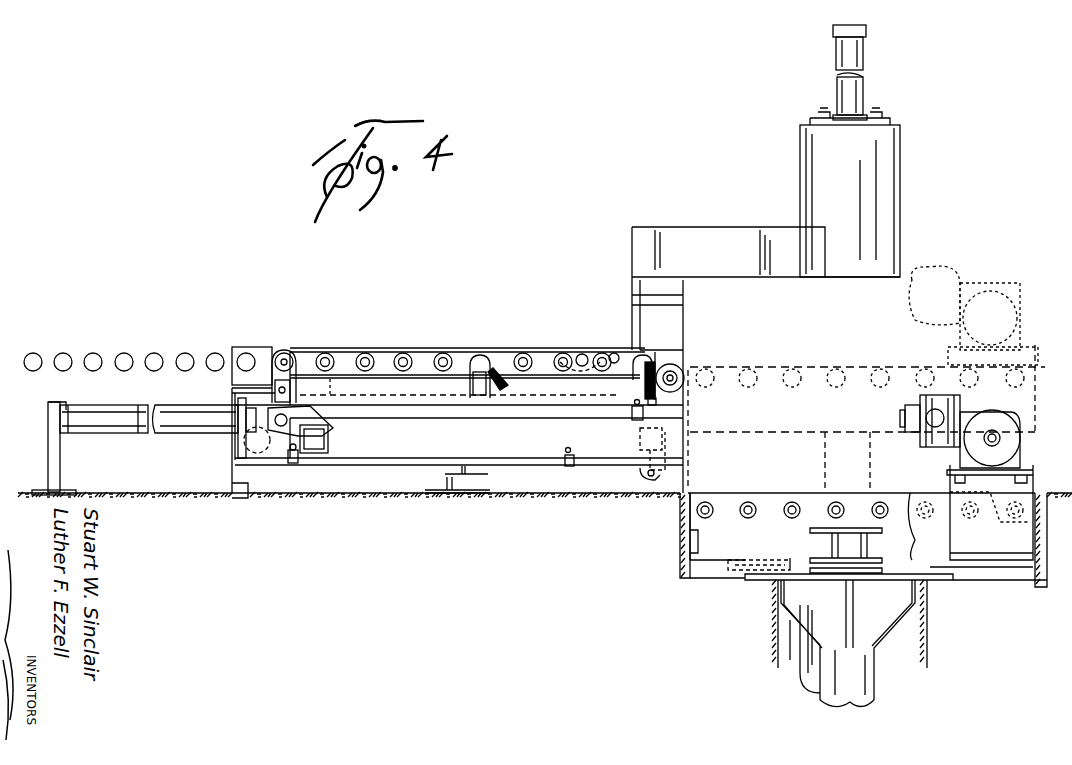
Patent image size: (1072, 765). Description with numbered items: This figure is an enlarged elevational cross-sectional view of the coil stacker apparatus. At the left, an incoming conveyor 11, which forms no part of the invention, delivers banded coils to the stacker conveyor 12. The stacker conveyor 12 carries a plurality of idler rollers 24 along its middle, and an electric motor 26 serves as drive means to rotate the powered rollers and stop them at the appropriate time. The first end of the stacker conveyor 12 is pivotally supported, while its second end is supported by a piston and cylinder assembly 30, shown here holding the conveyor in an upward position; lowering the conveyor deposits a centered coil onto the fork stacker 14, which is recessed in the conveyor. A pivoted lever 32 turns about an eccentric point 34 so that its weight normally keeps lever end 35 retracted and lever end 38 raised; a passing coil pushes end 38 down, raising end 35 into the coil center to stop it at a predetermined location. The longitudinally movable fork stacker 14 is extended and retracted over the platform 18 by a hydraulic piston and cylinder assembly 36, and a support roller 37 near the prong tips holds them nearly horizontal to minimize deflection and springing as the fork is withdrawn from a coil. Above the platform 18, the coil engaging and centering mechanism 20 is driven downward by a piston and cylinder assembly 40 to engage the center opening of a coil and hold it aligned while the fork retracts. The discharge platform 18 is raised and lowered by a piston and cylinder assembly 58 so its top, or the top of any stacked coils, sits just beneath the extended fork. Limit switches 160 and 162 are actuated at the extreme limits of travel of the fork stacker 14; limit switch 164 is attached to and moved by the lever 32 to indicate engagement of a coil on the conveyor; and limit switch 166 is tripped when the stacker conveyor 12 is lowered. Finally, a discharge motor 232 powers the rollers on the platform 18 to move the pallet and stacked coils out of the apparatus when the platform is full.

The conveyor 11 is at (153, 350).
The stacker conveyor 12 is at (432, 345).
The fork stacker 14 is at (322, 418).
The platform 18 is at (763, 490).
The coil engaging and centering mechanism 20 is at (903, 176).
The idler rollers 24 is at (396, 350).
The electric motor 26 is at (262, 346).
The piston and cylinder assembly 30 is at (640, 450).
The pivoted lever 32 is at (540, 380).
The eccentric point 34 is at (580, 365).
The lever end 35 is at (522, 385).
The hydraulic piston and cylinder assembly 36 is at (184, 436).
The support roller 37 is at (688, 370).
The lever end 38 is at (613, 352).
The piston and cylinder assembly 40 is at (856, 96).
The piston and cylinder assembly 58 is at (876, 683).
The limit switch 160 is at (300, 466).
The limit switch 162 is at (565, 452).
The limit switch 164 is at (516, 388).
The limit switch 166 is at (630, 420).
The discharge motor 232 is at (930, 440).